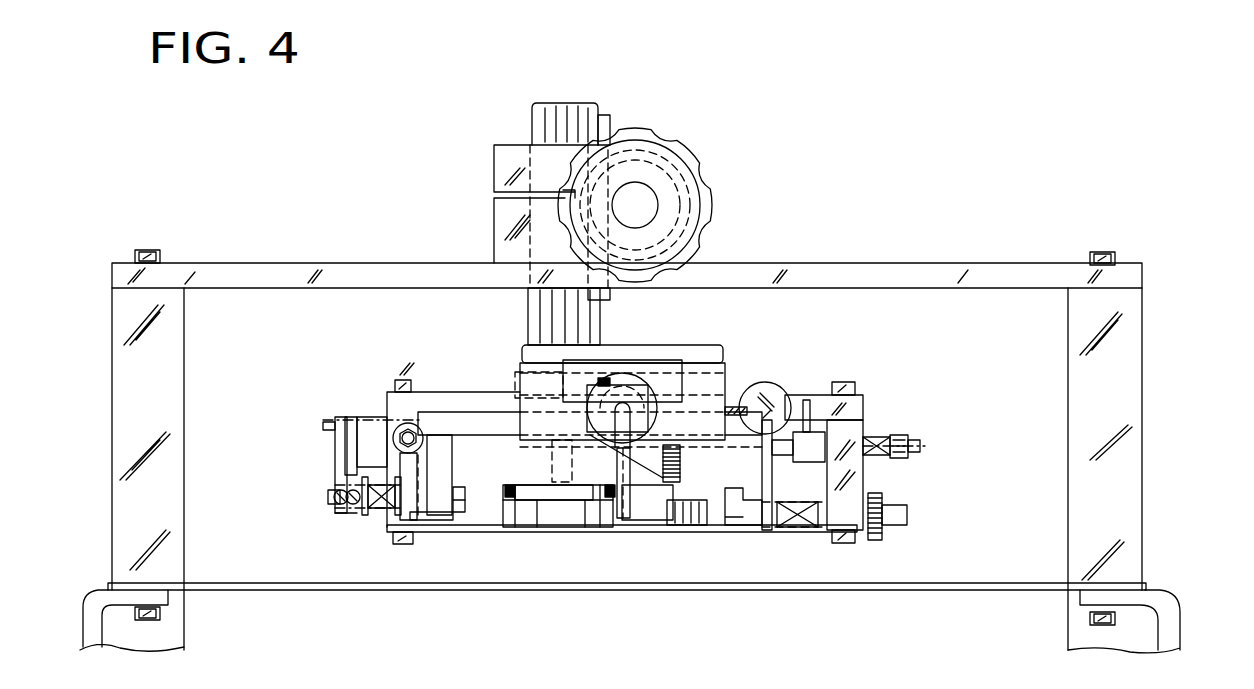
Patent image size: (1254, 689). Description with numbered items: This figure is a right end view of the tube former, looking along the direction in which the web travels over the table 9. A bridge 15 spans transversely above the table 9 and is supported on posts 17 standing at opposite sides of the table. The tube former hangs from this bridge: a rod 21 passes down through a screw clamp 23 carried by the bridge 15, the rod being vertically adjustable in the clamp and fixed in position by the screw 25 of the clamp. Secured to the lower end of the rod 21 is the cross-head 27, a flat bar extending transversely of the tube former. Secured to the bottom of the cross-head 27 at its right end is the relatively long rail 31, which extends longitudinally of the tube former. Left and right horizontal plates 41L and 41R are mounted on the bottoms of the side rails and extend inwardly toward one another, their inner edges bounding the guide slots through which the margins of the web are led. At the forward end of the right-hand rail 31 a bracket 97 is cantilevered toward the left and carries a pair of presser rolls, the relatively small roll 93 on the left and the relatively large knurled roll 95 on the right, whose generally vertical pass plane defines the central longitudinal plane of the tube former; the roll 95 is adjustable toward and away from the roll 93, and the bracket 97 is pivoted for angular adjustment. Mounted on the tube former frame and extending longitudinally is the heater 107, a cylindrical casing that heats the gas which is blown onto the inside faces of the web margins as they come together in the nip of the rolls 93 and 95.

The table 9 is at (235, 583).
The bridge 15 is at (240, 263).
The posts 17 is at (148, 425).
The rod 21 is at (528, 318).
The screw clamp 23 is at (494, 165).
The screw 25 is at (712, 190).
The cross-head 27 is at (808, 395).
The long rail 31 is at (382, 517).
The right hand horizontal plate 41R is at (485, 535).
The left hand horizontal plate 41L is at (782, 530).
The small roll 93 is at (665, 520).
The large roll 95 is at (535, 515).
The bracket 97 is at (478, 428).
The heater 107 is at (645, 388).